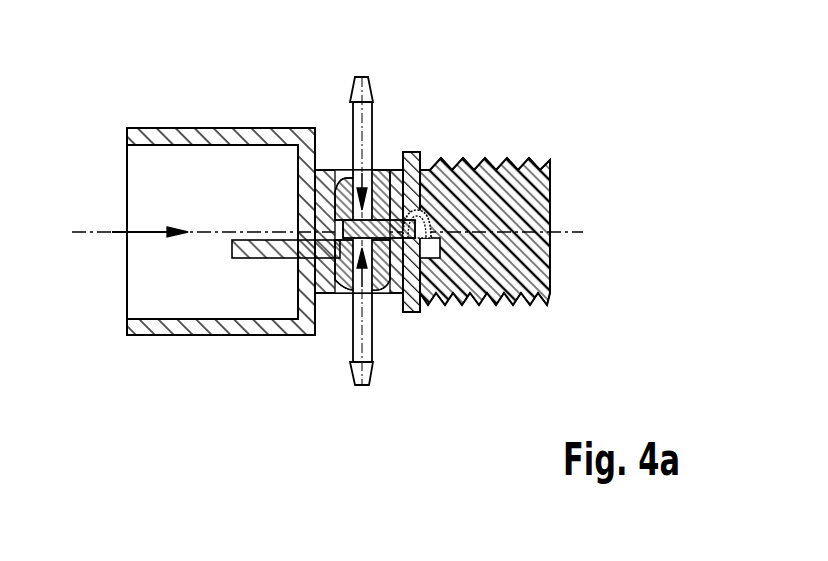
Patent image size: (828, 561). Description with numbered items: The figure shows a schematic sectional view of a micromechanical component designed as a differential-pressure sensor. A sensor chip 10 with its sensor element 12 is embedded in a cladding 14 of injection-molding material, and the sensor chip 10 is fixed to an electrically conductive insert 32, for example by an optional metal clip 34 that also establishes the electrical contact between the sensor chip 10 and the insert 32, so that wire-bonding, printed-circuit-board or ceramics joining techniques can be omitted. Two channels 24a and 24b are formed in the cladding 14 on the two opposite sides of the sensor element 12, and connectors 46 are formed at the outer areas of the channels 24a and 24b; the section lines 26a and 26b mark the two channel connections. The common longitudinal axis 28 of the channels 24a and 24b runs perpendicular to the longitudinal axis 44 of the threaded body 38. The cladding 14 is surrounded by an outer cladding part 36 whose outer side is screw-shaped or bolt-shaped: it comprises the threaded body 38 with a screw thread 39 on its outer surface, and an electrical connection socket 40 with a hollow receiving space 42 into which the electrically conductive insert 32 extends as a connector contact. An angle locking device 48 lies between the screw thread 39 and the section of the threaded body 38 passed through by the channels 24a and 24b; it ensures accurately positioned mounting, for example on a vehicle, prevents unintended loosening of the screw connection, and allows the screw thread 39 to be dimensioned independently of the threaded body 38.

The sensor chip 10 is at (341, 227).
The sensor element 12 is at (335, 170).
The cladding 14 is at (333, 295).
The channel 24a is at (372, 200).
The channel 24b is at (378, 287).
The upper pipe connection 26a is at (385, 57).
The lower pipe connection 26b is at (390, 459).
The common longitudinal axis 28 is at (363, 393).
The electrically conductive insert 32 is at (262, 258).
The metal clip 34 is at (433, 222).
The outer cladding part 36 is at (302, 323).
The threaded body 38 is at (550, 87).
The screw thread 39 is at (517, 300).
The electrical connection socket 40 is at (315, 87).
The hollow receiving space 42 is at (145, 232).
The longitudinal axis 44 is at (73, 236).
The connectors 46 is at (367, 85).
The angle locking device 48 is at (418, 150).